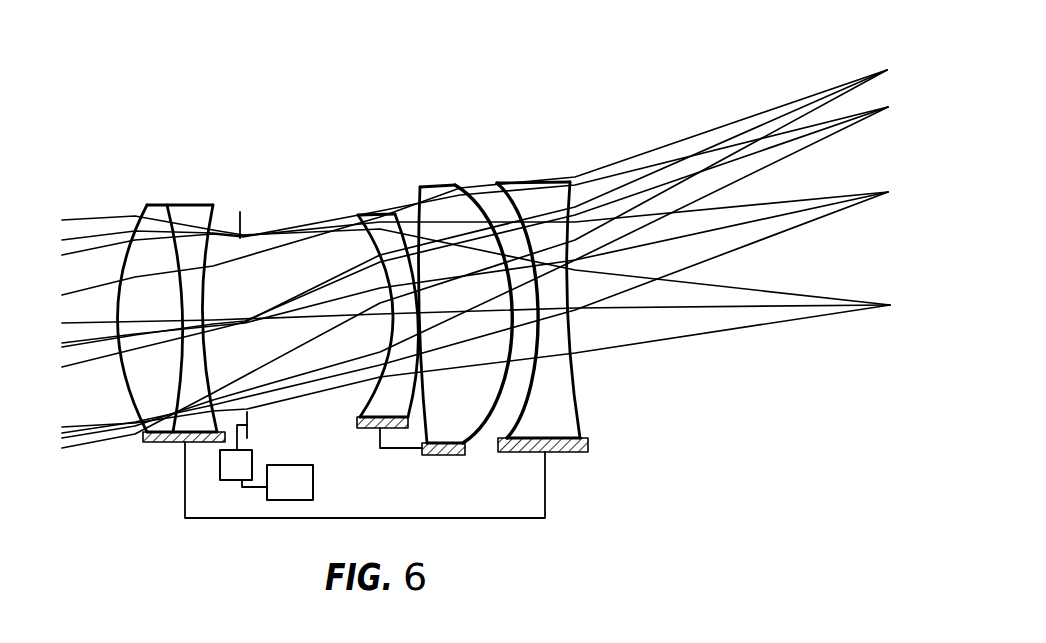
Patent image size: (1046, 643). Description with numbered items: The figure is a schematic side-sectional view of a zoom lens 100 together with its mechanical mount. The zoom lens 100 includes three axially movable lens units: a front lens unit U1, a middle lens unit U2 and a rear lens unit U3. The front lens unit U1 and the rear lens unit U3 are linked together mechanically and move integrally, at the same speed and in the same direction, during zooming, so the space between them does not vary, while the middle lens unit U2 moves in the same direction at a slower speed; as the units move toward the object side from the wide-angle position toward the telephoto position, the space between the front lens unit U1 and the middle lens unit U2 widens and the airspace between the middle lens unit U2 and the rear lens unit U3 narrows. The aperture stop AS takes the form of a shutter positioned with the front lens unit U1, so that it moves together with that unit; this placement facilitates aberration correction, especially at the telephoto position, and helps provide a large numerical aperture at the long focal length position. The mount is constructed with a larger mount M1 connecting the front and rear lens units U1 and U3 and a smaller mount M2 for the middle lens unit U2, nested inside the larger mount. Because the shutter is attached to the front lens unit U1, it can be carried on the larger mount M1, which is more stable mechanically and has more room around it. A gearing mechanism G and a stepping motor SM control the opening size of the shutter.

The zoom lens 100 is at (476, 309).
The front lens unit U1 is at (222, 188).
The middle lens unit U2 is at (500, 149).
The rear lens unit U3 is at (575, 171).
The aperture stop AS is at (240, 212).
The larger mount M1 is at (522, 518).
The smaller mount M2 is at (402, 448).
The gearing mechanism G is at (236, 452).
The stepping motor SM is at (277, 482).